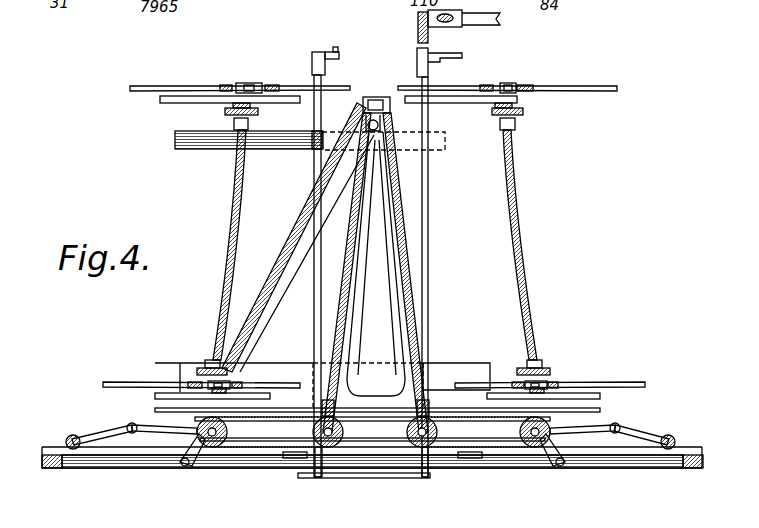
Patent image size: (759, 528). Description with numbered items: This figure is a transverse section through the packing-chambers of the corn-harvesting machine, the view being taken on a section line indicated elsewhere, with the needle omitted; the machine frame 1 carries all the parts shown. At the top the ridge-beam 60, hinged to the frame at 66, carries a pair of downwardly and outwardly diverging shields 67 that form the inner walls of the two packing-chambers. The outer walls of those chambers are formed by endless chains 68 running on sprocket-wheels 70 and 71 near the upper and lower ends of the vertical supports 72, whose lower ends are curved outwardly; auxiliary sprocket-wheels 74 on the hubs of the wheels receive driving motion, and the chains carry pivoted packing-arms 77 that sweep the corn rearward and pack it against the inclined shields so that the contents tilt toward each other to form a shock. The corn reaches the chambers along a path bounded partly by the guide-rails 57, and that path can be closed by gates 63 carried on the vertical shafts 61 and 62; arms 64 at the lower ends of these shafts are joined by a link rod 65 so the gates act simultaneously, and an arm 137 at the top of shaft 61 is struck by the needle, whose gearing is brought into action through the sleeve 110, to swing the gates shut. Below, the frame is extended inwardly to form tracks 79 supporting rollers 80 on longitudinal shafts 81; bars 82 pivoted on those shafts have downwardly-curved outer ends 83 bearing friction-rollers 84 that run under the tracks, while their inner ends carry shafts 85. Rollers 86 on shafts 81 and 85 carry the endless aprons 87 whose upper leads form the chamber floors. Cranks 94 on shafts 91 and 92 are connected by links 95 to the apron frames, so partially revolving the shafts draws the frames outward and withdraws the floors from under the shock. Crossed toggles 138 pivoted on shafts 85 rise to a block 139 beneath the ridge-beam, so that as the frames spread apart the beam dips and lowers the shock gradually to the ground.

The base frame 1 is at (42, 457).
The guide-rails 57 is at (195, 148).
The ridge-beam 60 is at (373, 96).
The vertical shaft 61 is at (430, 220).
The vertical shaft 62 is at (314, 178).
The gates 63 is at (330, 52).
The radially-extending arms 64 is at (318, 478).
The link rod 65 is at (360, 478).
The hinge 66 is at (135, 464).
The shields 67 is at (393, 257).
The endless chain 68 is at (268, 86).
The sprocket-wheels 70 is at (247, 84).
The sprocket-wheels 71 is at (232, 385).
The vertical supports 72 is at (232, 200).
The auxiliary sprocket-wheels 74 is at (222, 111).
The packing-arms 77 is at (175, 86).
The tracks 79 is at (105, 458).
The rollers 80 is at (240, 445).
The shafts 81 is at (228, 442).
The bars 82 is at (276, 440).
The downwardly-curved outer ends 83 is at (205, 452).
The friction-rollers 84 is at (184, 466).
The shafts 85 is at (322, 452).
The rollers 86 is at (197, 440).
The endless aprons 87 is at (295, 460).
The shaft 91 is at (675, 440).
The shaft 92 is at (73, 435).
The cranks 94 is at (110, 432).
The links 95 is at (136, 424).
The sleeve 110 is at (495, 25).
The arm 137 is at (440, 28).
The toggles 138 is at (395, 300).
The block 139 is at (390, 120).